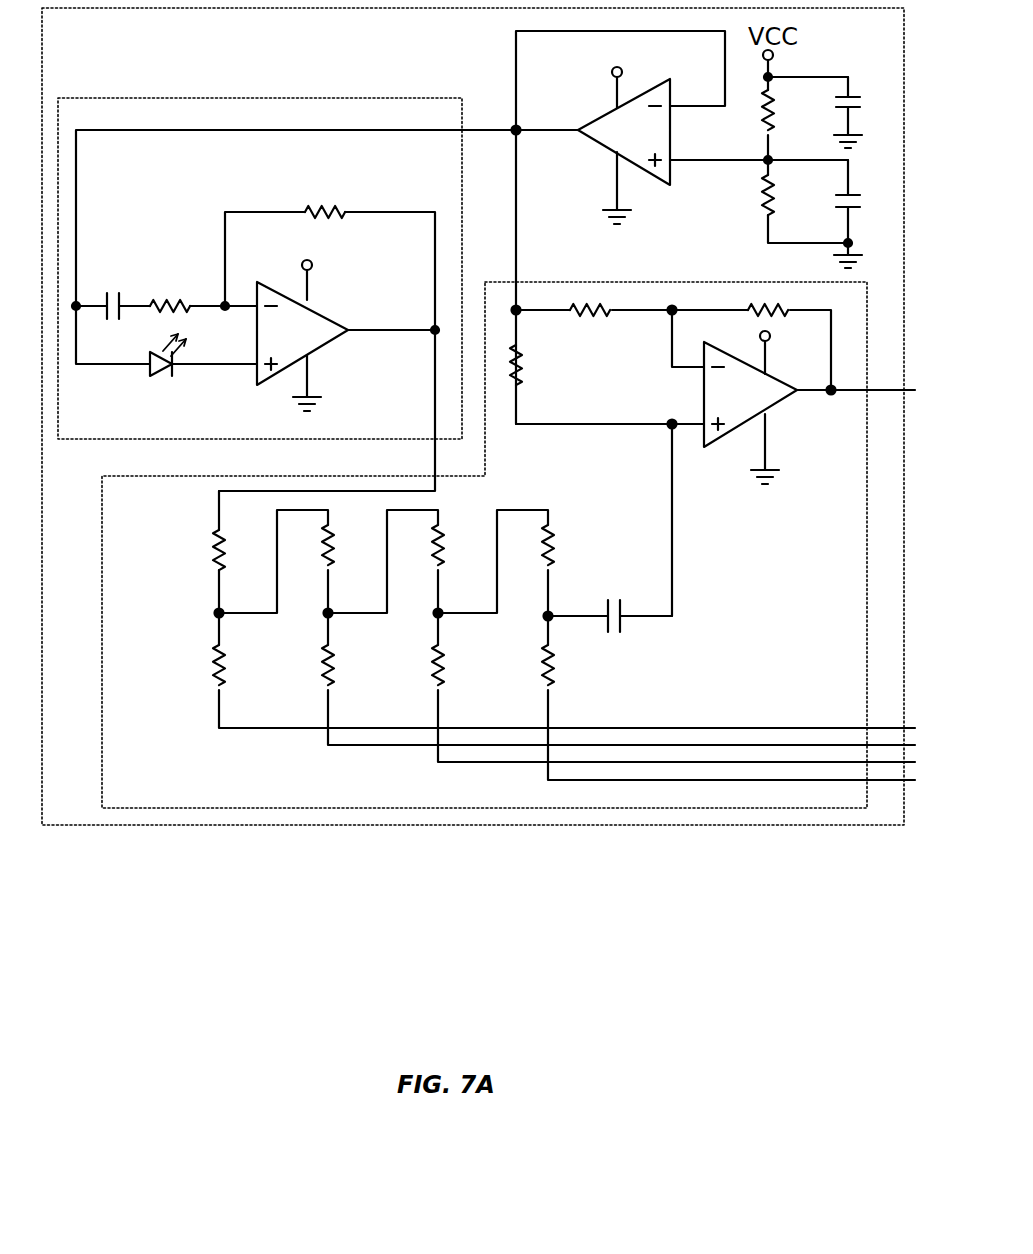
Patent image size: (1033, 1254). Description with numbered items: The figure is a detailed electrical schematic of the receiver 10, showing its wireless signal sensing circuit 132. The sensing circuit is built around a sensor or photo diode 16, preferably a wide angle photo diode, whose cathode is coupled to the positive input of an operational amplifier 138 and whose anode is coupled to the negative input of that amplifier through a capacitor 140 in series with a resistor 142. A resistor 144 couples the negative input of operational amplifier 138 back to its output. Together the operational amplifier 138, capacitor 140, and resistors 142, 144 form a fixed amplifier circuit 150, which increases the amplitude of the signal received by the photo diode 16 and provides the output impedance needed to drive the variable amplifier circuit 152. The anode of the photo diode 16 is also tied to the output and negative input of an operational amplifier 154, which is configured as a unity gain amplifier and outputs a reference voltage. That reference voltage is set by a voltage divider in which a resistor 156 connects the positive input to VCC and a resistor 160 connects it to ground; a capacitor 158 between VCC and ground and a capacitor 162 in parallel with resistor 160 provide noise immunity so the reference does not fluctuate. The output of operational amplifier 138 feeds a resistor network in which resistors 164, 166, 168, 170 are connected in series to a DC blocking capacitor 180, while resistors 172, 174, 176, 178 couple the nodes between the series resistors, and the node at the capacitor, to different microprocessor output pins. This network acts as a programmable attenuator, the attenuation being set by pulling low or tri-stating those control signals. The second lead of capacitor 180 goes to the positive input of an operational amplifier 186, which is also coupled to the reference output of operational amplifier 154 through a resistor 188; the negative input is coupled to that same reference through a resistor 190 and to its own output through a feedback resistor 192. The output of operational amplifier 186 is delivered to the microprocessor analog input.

The receiver 10 is at (318, 913).
The photo diode 16 is at (170, 372).
The wireless signal sensing circuit 132 is at (537, 826).
The operational amplifier 138 is at (335, 345).
The capacitor 140 is at (113, 322).
The resistor 142 is at (190, 300).
The resistor 144 is at (313, 210).
The fixed amplifier circuit 150 is at (378, 98).
The variable amplifier circuit 152 is at (710, 809).
The operational amplifier 154 is at (585, 140).
The resistor 156 is at (771, 120).
The capacitor 158 is at (866, 108).
The resistor 160 is at (766, 200).
The capacitor 162 is at (866, 208).
The resistor 164 is at (216, 557).
The resistor 166 is at (324, 552).
The resistor 168 is at (443, 535).
The resistor 170 is at (552, 533).
The resistor 172 is at (212, 671).
The resistor 174 is at (324, 666).
The resistor 176 is at (434, 667).
The resistor 178 is at (546, 667).
The DC blocking capacitor 180 is at (628, 608).
The operational amplifier 186 is at (786, 396).
The resistor 188 is at (524, 360).
The resistor 190 is at (606, 314).
The resistor 192 is at (756, 308).